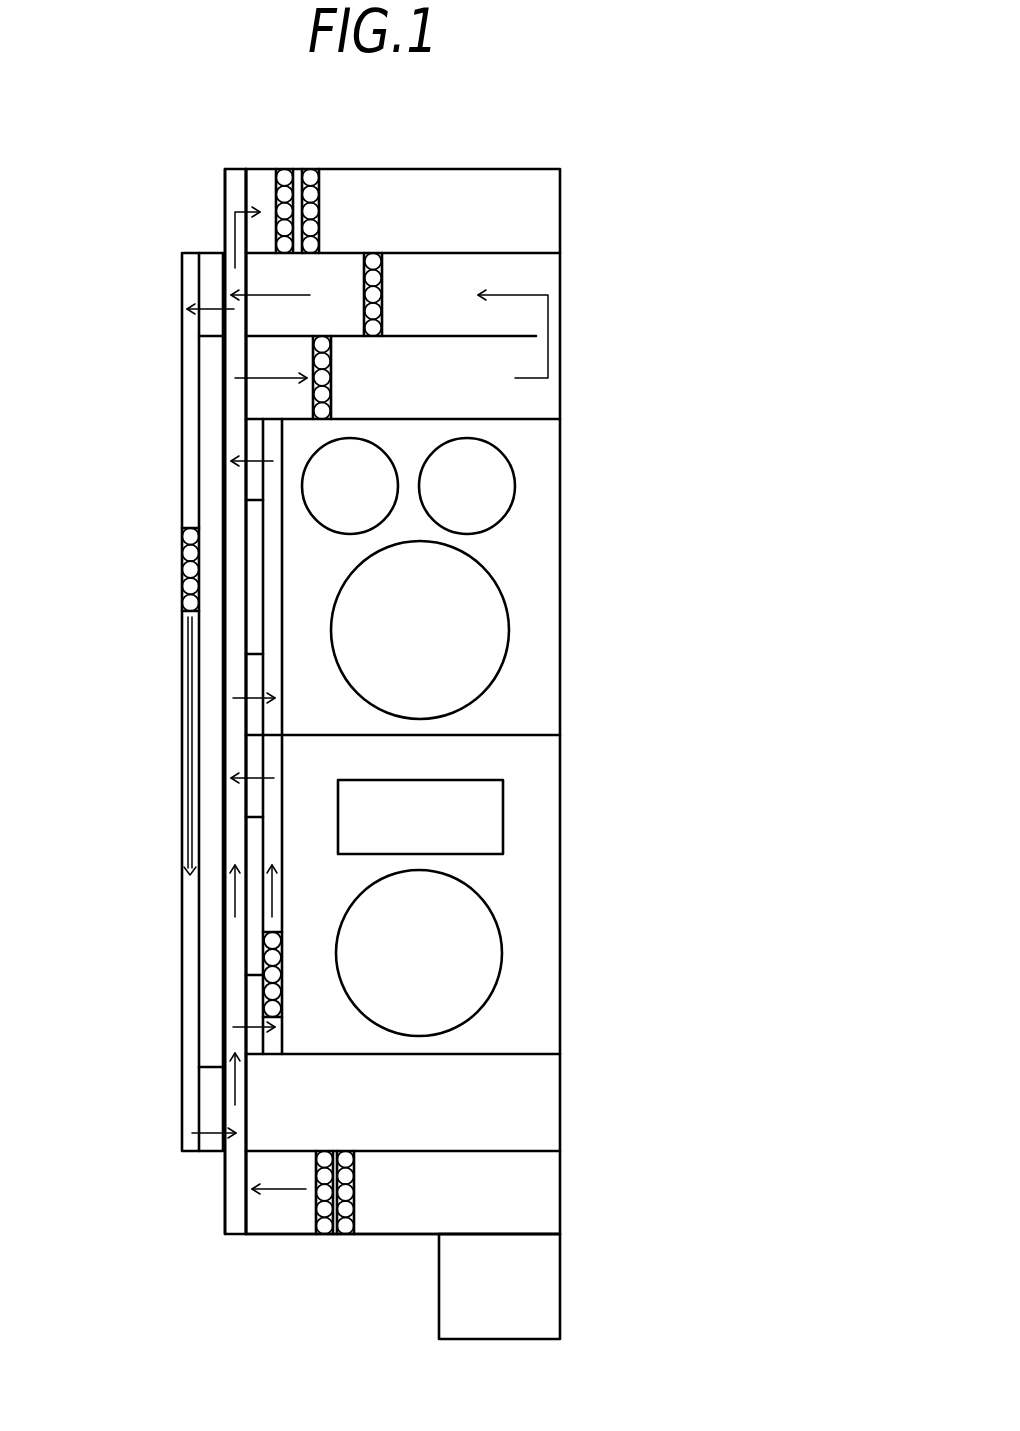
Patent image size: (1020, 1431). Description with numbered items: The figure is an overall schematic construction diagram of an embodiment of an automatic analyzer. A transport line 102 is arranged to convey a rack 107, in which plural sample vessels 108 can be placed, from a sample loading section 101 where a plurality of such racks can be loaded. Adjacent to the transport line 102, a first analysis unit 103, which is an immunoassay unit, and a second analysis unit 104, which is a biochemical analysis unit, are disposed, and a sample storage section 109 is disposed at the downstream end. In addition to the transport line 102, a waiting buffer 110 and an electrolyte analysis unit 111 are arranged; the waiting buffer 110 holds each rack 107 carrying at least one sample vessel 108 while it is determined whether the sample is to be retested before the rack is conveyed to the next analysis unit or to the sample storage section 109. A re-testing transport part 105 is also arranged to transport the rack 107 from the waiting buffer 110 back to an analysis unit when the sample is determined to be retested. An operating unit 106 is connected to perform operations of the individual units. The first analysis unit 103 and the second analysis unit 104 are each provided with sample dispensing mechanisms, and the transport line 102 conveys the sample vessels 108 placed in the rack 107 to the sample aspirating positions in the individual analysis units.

The sample loading section 101 is at (544, 1178).
The transport line 102 is at (225, 1002).
The first analysis unit 103 is at (524, 869).
The second analysis unit 104 is at (540, 580).
The re-testing transport part 105 is at (180, 755).
The operating unit 106 is at (545, 1271).
The rack 107 is at (182, 543).
The sample vessel 108 is at (182, 598).
The sample storage section 109 is at (247, 190).
The waiting buffer 110 is at (542, 280).
The electrolyte analysis unit 111 is at (545, 1098).